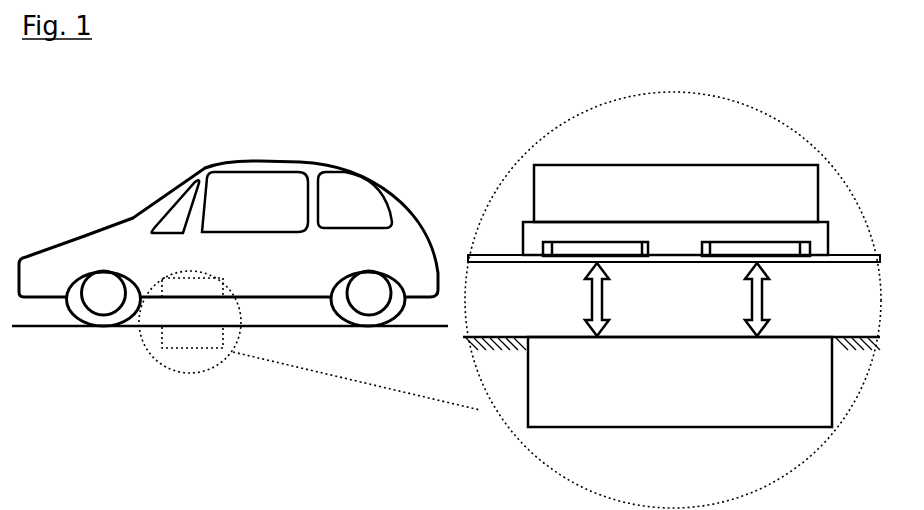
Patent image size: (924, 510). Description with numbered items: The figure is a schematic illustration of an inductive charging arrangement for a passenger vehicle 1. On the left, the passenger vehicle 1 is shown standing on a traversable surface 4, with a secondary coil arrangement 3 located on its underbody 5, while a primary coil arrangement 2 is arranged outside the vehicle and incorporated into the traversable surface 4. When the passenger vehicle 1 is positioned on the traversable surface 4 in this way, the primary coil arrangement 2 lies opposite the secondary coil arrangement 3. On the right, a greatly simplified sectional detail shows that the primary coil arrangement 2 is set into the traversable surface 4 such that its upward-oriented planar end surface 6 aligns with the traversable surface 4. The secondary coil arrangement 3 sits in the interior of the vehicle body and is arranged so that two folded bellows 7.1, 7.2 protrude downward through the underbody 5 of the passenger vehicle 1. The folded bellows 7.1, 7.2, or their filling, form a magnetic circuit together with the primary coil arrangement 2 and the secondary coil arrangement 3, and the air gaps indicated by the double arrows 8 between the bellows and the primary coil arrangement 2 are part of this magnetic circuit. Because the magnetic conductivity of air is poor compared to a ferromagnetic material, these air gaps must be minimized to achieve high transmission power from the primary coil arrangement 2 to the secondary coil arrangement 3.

The passenger vehicle 1 is at (295, 150).
The primary coil arrangement 2 is at (200, 347).
The secondary coil arrangement 3 is at (177, 297).
The traversable surface 4 is at (450, 319).
The underbody 5 is at (266, 292).
The planar end surface 6 is at (796, 323).
The folded bellows 7.1 is at (574, 250).
The folded bellows 7.2 is at (797, 260).
The double arrows 8 is at (745, 300).